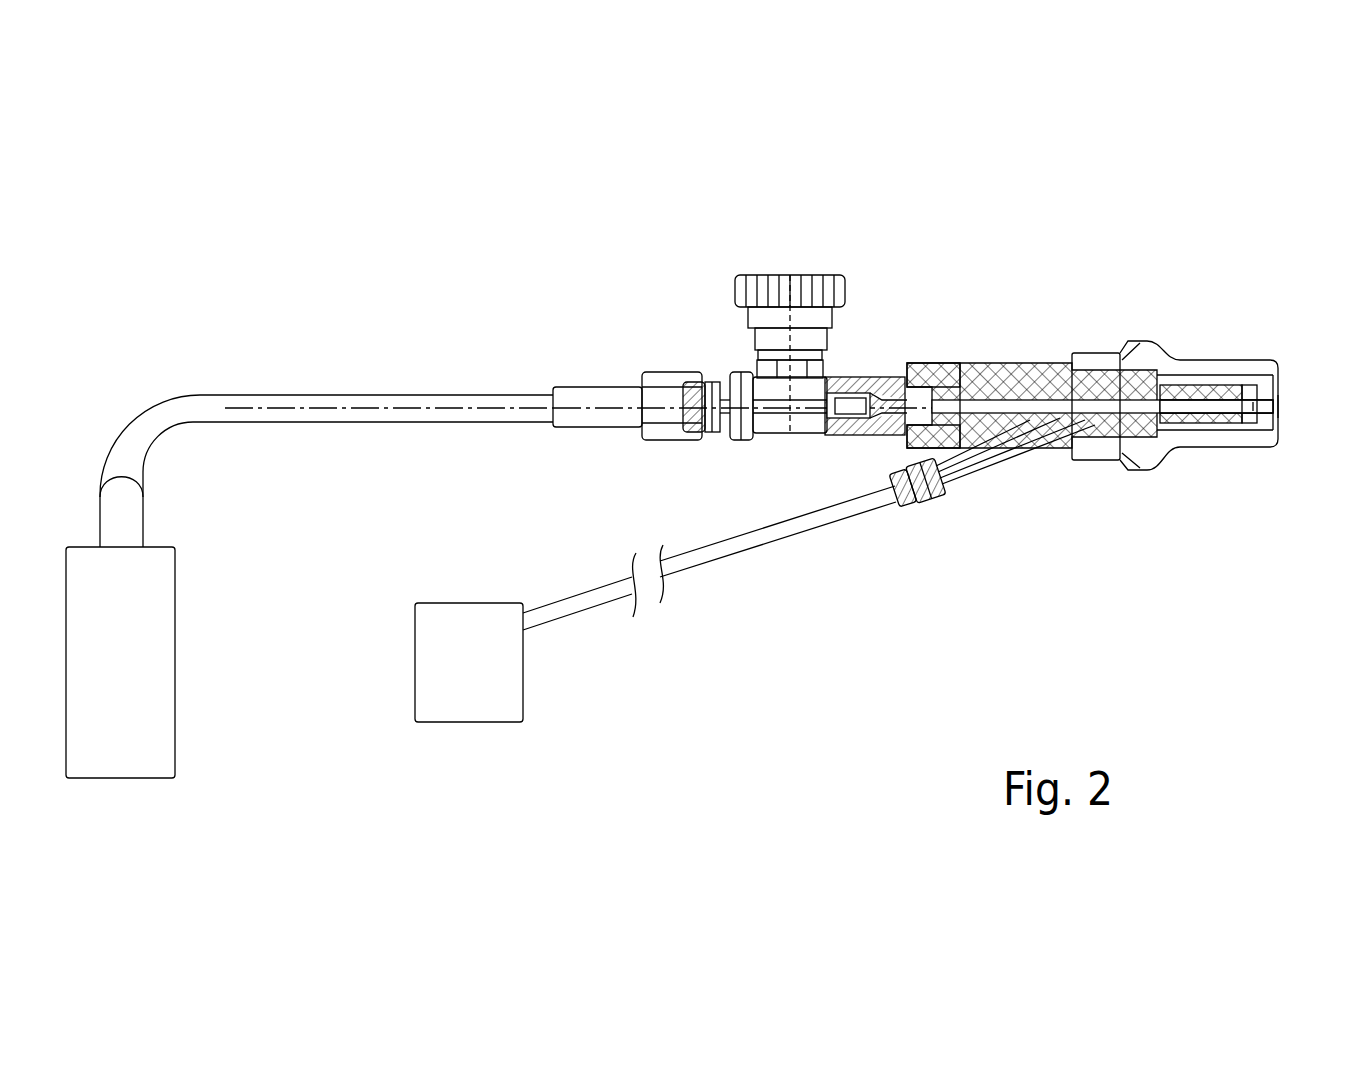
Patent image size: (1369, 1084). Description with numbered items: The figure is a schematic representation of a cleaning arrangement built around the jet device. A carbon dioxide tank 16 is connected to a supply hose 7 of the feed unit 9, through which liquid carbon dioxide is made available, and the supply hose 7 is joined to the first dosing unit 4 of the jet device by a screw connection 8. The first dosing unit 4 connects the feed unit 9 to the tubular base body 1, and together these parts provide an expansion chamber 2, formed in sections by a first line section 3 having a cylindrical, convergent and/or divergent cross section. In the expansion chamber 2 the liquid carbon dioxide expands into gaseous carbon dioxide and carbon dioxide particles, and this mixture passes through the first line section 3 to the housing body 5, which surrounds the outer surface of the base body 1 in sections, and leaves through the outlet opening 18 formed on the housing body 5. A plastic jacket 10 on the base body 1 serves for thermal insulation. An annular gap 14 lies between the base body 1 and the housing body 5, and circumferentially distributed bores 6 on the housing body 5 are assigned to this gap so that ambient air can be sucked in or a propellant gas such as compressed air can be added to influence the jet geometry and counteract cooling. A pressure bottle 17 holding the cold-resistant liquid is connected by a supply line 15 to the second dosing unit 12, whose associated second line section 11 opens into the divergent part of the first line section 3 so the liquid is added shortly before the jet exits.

The tubular base body 1 is at (1005, 365).
The expansion chamber 2 is at (840, 383).
The first line section 3 is at (940, 363).
The first dosing unit 4 is at (803, 251).
The housing body 5 is at (1222, 372).
The bores 6 is at (1110, 476).
The supply hose 7 is at (226, 407).
The screw connection 8 is at (682, 372).
The feed unit 9 is at (639, 300).
The plastic jacket 10 is at (1048, 360).
The second line section 11 is at (982, 460).
The second dosing unit 12 is at (921, 516).
The annular gap 14 is at (1173, 427).
The supply line 15 is at (782, 524).
The carbon dioxide tank 16 is at (141, 674).
The pressure bottle 17 is at (489, 674).
The outlet opening 18 is at (1289, 390).